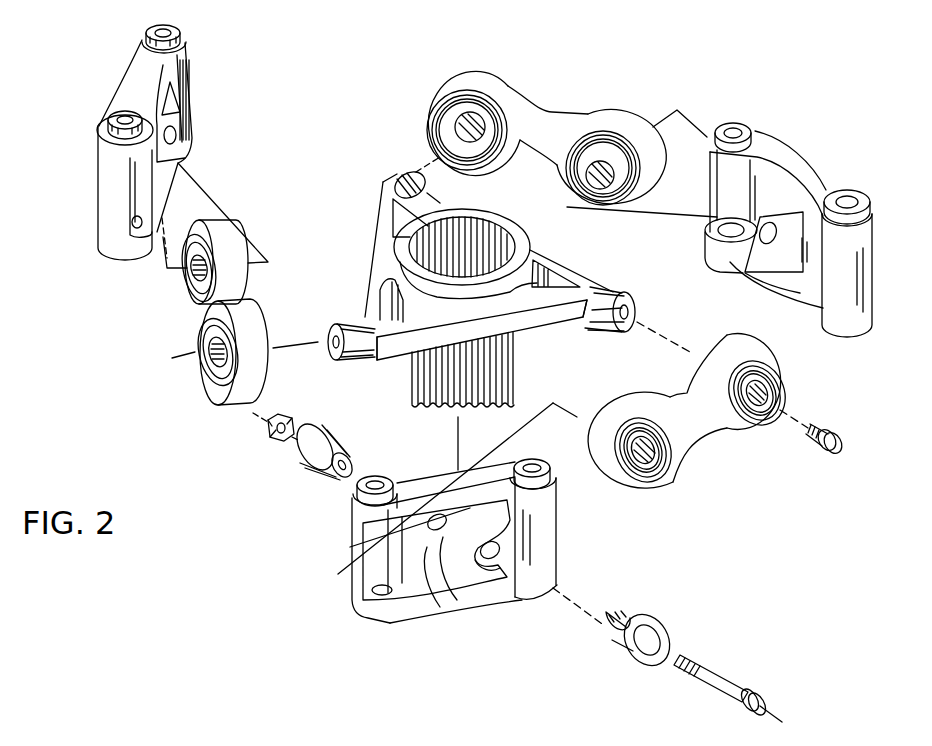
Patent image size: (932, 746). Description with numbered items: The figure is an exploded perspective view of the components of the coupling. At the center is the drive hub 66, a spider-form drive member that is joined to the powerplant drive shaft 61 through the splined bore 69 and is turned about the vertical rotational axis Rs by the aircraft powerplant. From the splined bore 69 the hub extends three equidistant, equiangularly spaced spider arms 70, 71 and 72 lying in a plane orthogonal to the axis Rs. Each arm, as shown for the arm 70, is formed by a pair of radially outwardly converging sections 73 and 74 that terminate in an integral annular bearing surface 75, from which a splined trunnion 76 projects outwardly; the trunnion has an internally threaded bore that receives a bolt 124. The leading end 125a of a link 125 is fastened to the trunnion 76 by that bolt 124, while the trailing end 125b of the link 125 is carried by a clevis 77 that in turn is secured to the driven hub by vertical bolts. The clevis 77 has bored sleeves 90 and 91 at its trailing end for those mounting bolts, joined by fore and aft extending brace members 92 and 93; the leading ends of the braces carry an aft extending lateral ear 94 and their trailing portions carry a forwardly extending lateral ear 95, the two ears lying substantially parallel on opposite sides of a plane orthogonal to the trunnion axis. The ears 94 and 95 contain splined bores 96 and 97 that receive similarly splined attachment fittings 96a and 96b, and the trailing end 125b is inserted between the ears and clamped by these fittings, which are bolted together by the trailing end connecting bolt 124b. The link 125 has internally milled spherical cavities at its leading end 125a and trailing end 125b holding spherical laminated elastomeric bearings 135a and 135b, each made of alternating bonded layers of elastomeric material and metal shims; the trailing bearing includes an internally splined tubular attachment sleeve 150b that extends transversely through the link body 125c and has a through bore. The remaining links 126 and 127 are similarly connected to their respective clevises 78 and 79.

The powerplant drive shaft 61 is at (428, 385).
The drive hub 66 is at (387, 208).
The splined bore 69 is at (483, 212).
The spider arm 70 is at (615, 285).
The spider arm 71 is at (392, 178).
The spider arm 72 is at (392, 350).
The radially outwardly converging section 73 is at (384, 240).
The radially outwardly converging section 74 is at (427, 193).
The annular bearing surface 75 is at (588, 318).
The splined trunnion 76 is at (350, 330).
The clevis 77 is at (351, 550).
The clevis 78 is at (191, 53).
The clevis 79 is at (768, 148).
The bored sleeve 90 is at (383, 597).
The bored sleeve 91 is at (355, 485).
The brace member 92 is at (443, 492).
The brace member 93 is at (447, 597).
The aft extending lateral ear 94 is at (480, 573).
The forwardly extending lateral ear 95 is at (427, 547).
The splined bore 96 is at (497, 560).
The splined attachment fitting 96a is at (660, 622).
The splined attachment fitting 96b is at (310, 472).
The splined bore 97 is at (433, 497).
The bolt 124 is at (840, 434).
The trailing end connecting bolt 124b is at (710, 677).
The link 125 is at (703, 420).
The leading end of link 125a is at (790, 350).
The trailing end of link 125b is at (604, 475).
The link body 125c is at (687, 393).
The link 126 is at (193, 306).
The link 127 is at (547, 113).
The spherical laminated elastomeric bearing 135a is at (708, 347).
The spherical laminated elastomeric bearing 135b is at (630, 487).
The trailing end attachment sleeve 150b is at (640, 447).
The rotational axis of drive shaft Rs is at (458, 435).